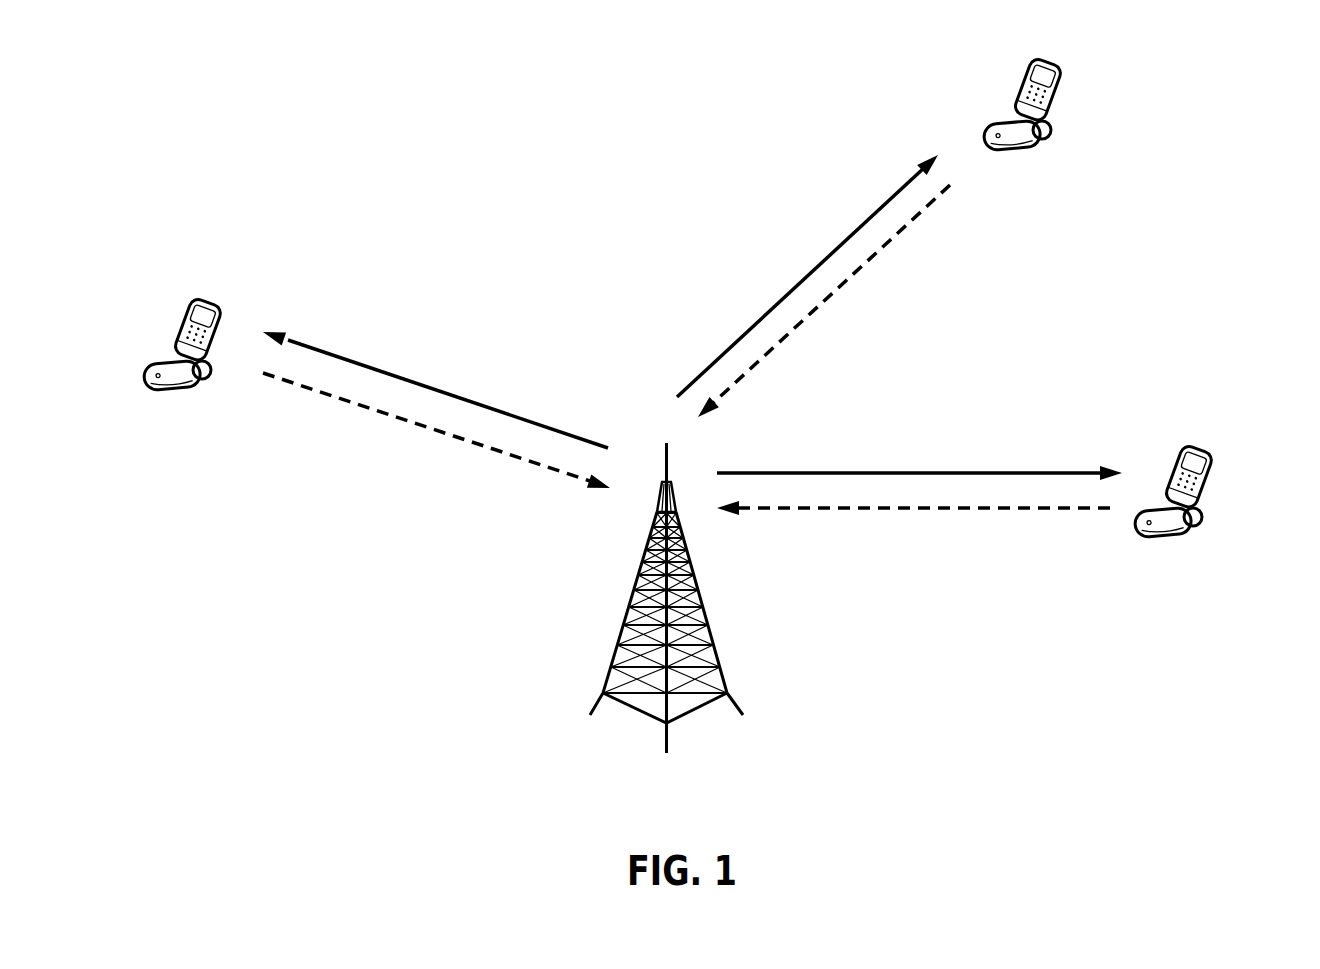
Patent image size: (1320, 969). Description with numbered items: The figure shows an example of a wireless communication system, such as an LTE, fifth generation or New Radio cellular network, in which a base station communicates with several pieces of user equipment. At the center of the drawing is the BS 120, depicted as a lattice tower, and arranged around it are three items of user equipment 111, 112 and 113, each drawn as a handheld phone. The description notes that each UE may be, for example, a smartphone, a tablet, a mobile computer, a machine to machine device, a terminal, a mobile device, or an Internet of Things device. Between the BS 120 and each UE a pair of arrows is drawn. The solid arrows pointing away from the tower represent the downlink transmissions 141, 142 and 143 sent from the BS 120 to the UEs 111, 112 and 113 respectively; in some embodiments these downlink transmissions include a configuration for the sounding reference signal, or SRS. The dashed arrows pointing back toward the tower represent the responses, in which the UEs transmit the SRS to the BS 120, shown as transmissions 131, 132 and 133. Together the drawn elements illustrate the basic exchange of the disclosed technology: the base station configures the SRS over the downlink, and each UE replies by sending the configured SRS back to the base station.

The user equipment 111 is at (200, 388).
The user equipment 112 is at (1190, 537).
The user equipment 113 is at (1042, 148).
The base station 120 is at (723, 673).
The SRS transmission 131 is at (480, 443).
The SRS transmission 132 is at (880, 510).
The SRS transmission 133 is at (850, 275).
The downlink transmission 141 is at (372, 367).
The downlink transmission 142 is at (1030, 472).
The downlink transmission 143 is at (855, 228).